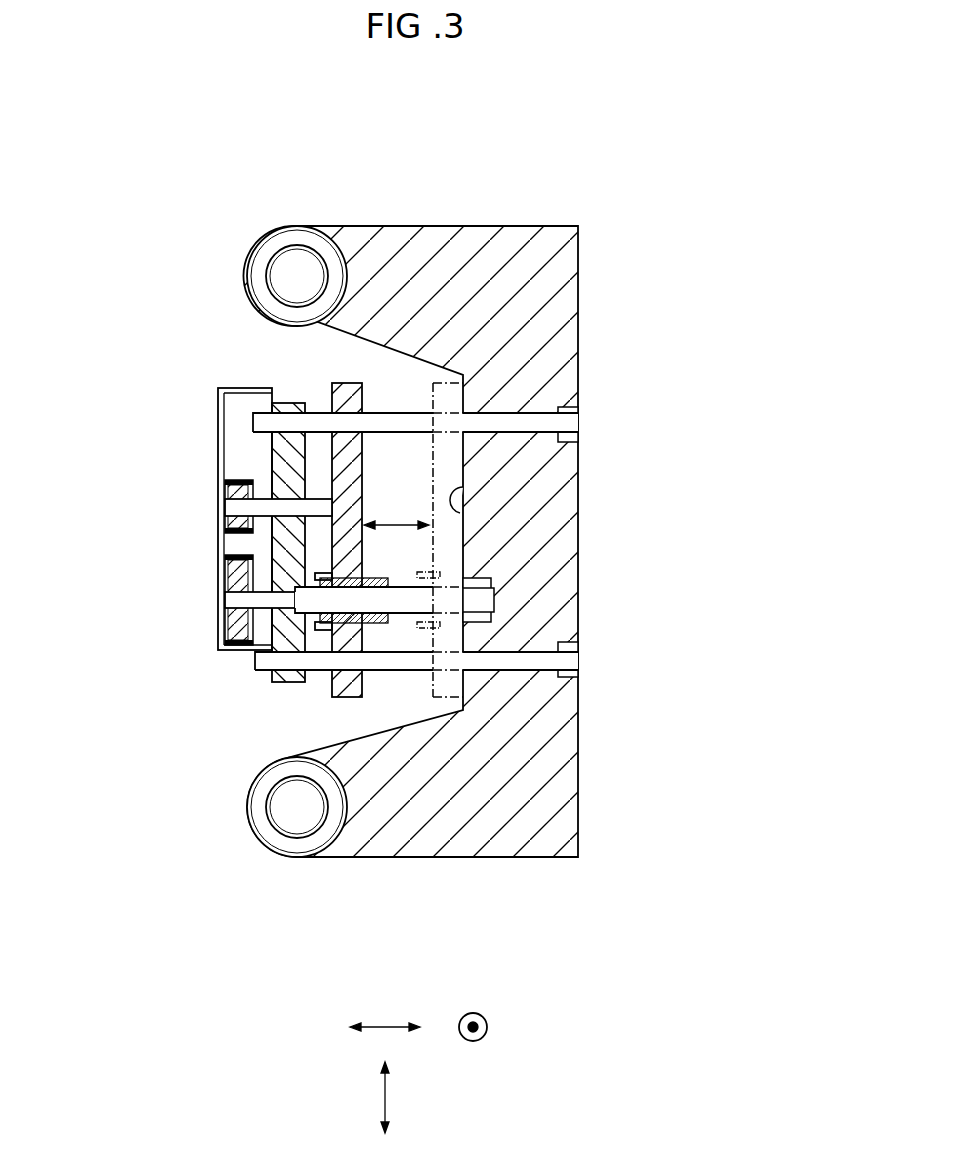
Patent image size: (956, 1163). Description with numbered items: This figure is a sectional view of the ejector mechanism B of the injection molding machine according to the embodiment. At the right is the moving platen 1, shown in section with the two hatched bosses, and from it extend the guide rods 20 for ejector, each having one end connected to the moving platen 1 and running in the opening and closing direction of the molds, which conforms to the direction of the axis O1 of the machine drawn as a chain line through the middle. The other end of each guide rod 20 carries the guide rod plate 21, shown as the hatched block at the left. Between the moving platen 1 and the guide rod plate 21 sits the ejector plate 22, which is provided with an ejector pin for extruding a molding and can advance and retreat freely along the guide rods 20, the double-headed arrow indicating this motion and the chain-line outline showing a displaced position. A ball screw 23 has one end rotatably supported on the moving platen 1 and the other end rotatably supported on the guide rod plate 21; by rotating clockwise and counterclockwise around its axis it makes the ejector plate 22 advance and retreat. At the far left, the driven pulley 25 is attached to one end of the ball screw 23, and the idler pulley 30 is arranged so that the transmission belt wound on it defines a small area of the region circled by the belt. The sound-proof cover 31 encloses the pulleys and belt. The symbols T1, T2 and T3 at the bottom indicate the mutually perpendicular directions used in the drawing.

The moving platen 1 is at (578, 227).
The guide rod 20 is at (397, 422).
The guide rod plate 21 is at (285, 403).
The ejector plate 22 is at (347, 383).
The ball screw 23 is at (405, 603).
The driven pulley 25 is at (242, 627).
The idler pulley 30 is at (232, 532).
The sound-proof cover 31 is at (218, 482).
The ejector mechanism B is at (168, 362).
The axis O1 is at (372, 540).
The direction T1 is at (385, 1011).
The direction T2 is at (403, 1097).
The direction T3 is at (487, 1021).